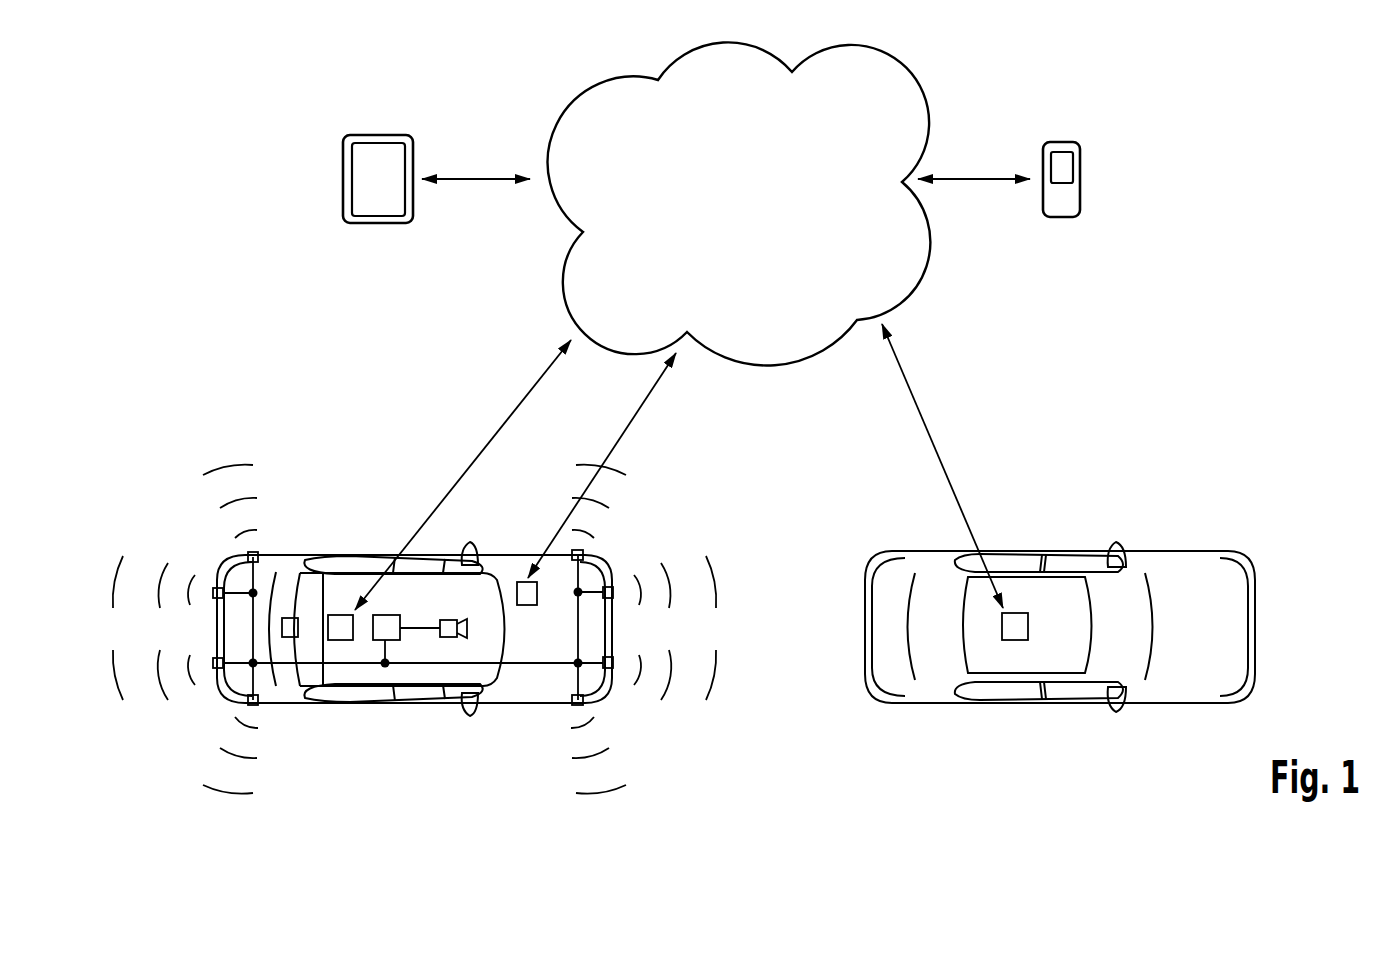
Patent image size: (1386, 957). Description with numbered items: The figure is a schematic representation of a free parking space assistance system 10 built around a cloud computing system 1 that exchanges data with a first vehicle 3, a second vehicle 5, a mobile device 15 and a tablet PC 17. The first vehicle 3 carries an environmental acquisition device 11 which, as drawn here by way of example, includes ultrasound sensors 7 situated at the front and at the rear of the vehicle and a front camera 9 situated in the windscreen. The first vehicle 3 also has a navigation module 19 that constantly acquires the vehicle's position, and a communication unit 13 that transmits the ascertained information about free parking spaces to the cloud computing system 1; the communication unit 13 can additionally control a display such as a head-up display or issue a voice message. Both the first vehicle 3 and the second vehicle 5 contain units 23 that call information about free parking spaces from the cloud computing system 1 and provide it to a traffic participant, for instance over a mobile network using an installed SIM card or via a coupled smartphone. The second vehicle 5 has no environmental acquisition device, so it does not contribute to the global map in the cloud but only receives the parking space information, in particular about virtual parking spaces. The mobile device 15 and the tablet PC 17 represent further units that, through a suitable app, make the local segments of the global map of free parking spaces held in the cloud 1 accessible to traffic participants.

The cloud computing system 1 is at (925, 271).
The first vehicle 3 is at (413, 703).
The second vehicle 5 is at (1003, 703).
The ultrasound sensors 7 is at (253, 557).
The front camera 9 is at (447, 620).
The free parking space assistance system 10 is at (985, 69).
The environmental acquisition device 11 is at (386, 615).
The communication unit 13 is at (340, 615).
The mobile device 15 is at (1080, 180).
The tablet PC 17 is at (343, 179).
The navigation module 19 is at (290, 618).
The units 23 is at (526, 582).